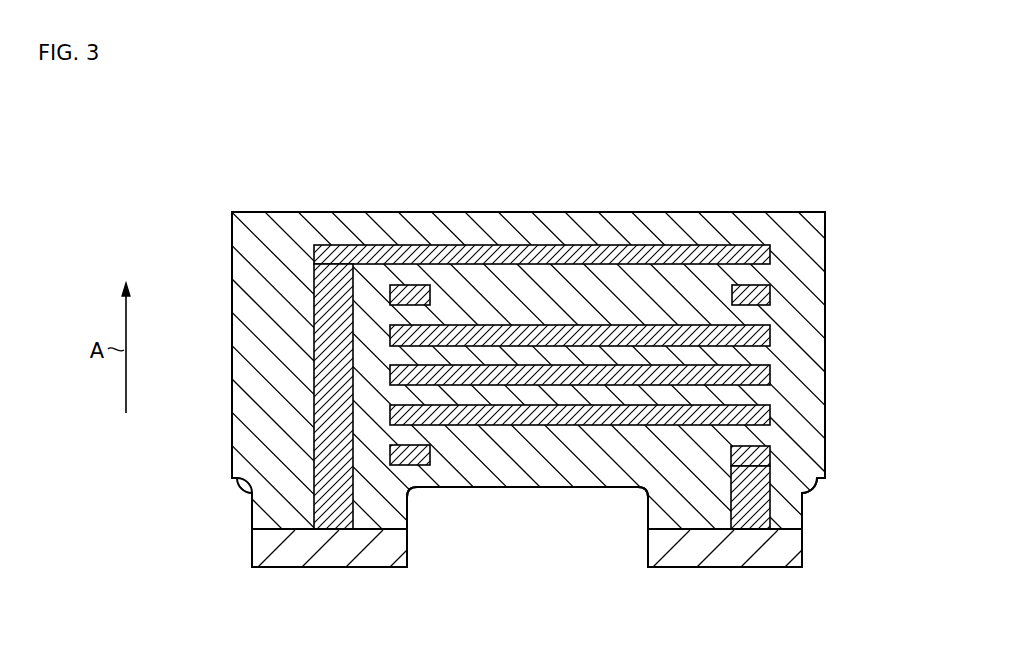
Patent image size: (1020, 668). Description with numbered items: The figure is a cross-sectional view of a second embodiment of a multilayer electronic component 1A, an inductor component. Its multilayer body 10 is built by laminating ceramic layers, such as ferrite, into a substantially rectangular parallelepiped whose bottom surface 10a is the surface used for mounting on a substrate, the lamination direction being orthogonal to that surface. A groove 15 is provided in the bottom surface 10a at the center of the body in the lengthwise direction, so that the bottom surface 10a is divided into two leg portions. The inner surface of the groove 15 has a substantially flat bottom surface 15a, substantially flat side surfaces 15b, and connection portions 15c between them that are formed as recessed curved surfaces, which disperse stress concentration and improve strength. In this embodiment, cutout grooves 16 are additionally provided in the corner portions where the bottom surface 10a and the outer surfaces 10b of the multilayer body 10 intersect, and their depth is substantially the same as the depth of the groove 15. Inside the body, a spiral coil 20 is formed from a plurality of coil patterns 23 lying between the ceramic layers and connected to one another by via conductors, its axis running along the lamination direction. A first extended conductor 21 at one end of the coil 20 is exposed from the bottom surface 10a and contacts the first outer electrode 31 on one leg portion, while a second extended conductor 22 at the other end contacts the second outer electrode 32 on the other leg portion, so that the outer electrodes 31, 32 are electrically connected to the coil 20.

The multilayer electronic component 1A is at (524, 155).
The multilayer body 10 is at (381, 198).
The bottom surface 10a is at (268, 537).
The outer surfaces 10b is at (232, 262).
The groove 15 is at (527, 546).
The bottom surface 15a is at (548, 488).
The side surfaces 15b is at (410, 520).
The connection portions 15c is at (410, 490).
The cutout grooves 16 is at (248, 502).
The coil 20 is at (607, 232).
The first extended conductor 21 is at (330, 312).
The second extended conductor 22 is at (760, 495).
The coil patterns 23 is at (683, 253).
The first outer electrode 31 is at (322, 556).
The second outer electrode 32 is at (740, 557).